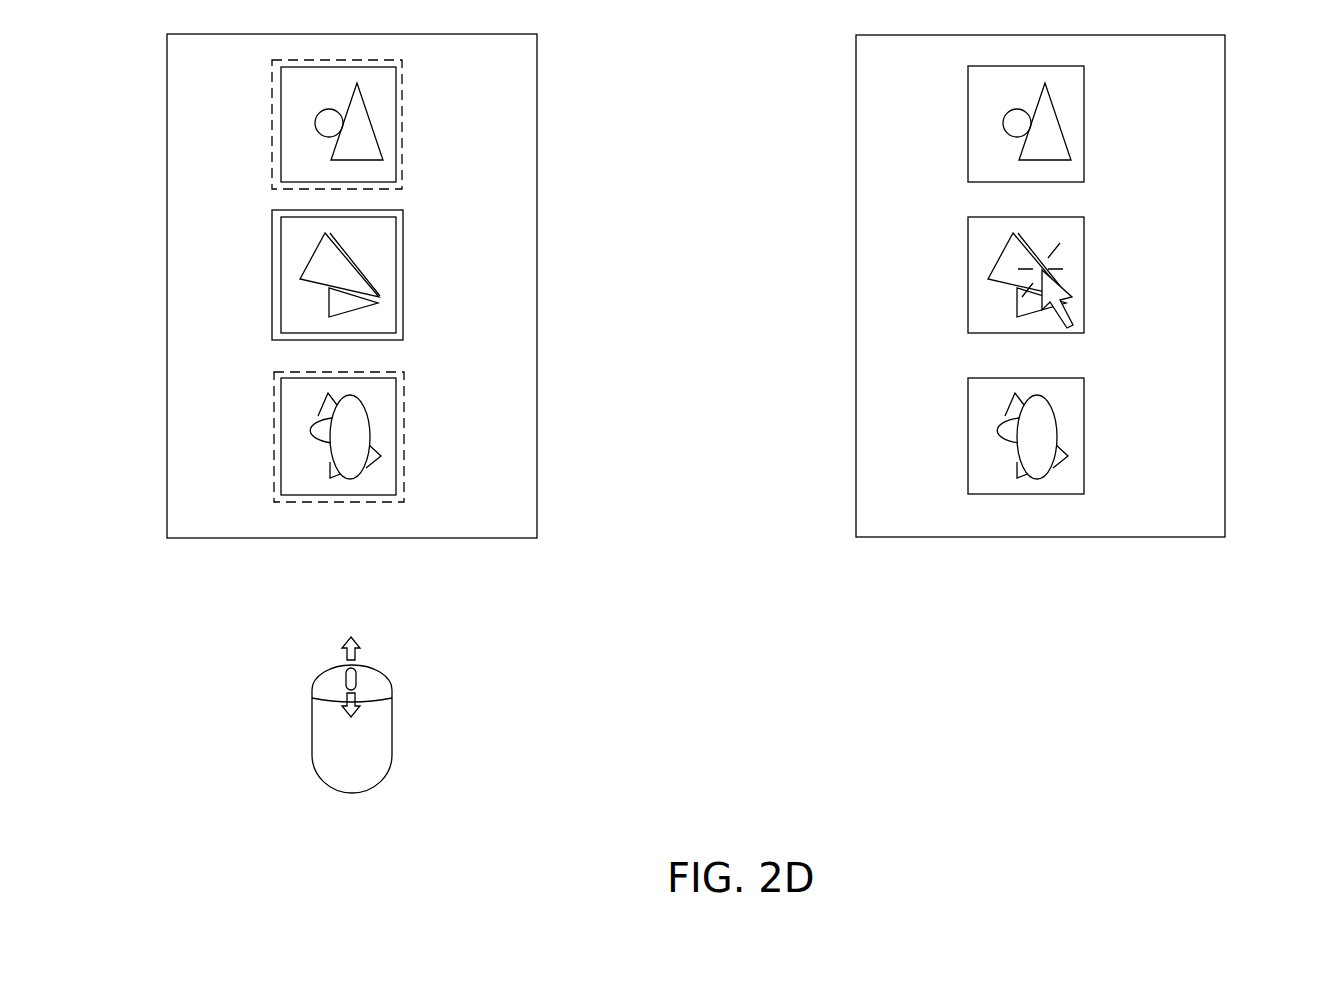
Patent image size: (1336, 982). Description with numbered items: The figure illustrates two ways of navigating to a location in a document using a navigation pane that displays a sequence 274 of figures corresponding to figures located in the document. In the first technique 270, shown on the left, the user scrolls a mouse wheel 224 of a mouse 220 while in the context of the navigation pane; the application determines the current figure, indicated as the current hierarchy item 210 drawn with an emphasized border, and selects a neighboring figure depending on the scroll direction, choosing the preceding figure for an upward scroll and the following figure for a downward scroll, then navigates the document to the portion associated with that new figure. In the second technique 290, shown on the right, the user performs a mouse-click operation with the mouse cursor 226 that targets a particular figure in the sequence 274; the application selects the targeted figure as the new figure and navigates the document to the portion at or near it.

The sequence of figures 274 is at (200, 153).
The current hierarchy item 210 is at (402, 231).
The mouse cursor 226 is at (1068, 316).
The mouse 220 is at (313, 727).
The mouse wheel 224 is at (346, 680).
The first technique 270 is at (213, 603).
The second technique 290 is at (900, 620).